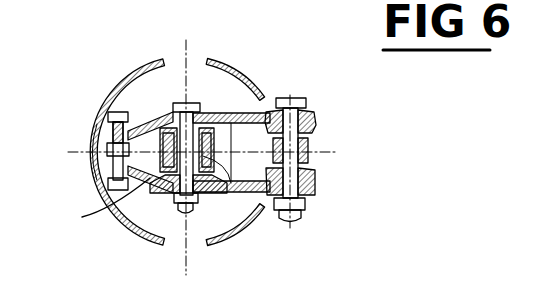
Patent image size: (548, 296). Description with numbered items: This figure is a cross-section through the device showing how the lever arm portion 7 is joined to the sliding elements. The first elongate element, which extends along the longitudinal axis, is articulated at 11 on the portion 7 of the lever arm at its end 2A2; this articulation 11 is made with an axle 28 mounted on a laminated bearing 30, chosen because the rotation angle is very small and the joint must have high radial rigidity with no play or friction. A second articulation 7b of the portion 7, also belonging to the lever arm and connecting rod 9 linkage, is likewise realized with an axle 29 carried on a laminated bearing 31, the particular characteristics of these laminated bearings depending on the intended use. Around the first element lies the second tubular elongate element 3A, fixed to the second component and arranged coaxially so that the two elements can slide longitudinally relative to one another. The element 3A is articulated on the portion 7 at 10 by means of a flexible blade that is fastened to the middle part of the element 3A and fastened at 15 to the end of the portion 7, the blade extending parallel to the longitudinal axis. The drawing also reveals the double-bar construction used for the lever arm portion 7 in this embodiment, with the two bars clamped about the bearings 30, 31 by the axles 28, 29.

The second tubular elongate element 3A is at (115, 84).
The portion of the lever arm 7 is at (231, 113).
The articulation 7b is at (288, 97).
The connecting rod 9 is at (308, 148).
The articulation 10 is at (88, 160).
The articulation 11 is at (188, 100).
The fastening point of the flexible blade 15 is at (103, 143).
The axle 28 is at (173, 203).
The axle 29 is at (313, 192).
The laminated bearing 30 is at (103, 205).
The laminated bearing 31 is at (310, 110).
The end of the first elongate element 2A2 is at (231, 192).